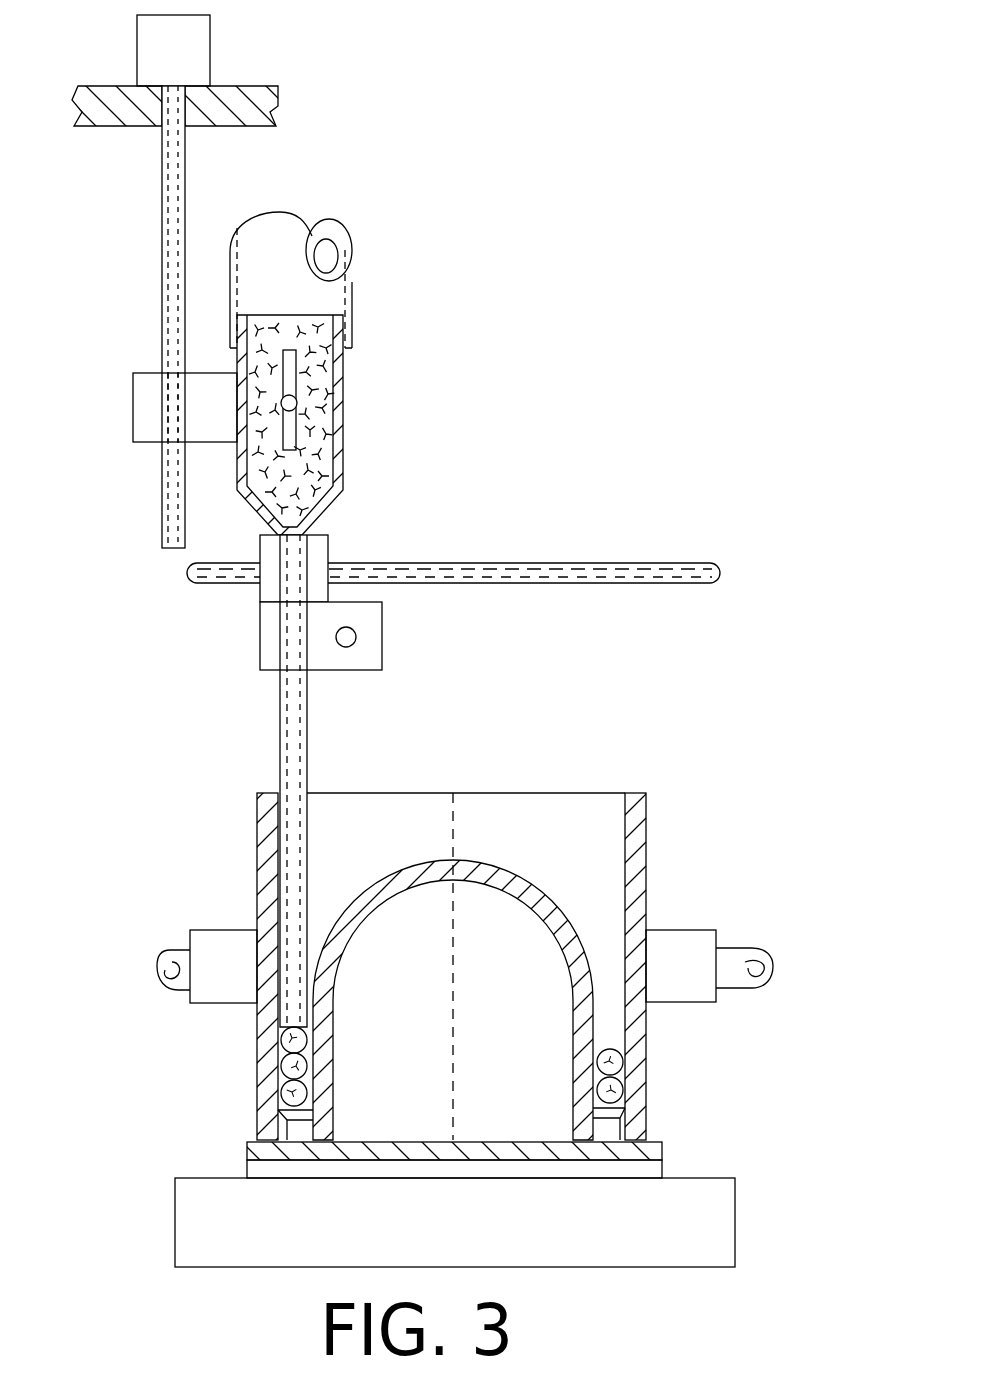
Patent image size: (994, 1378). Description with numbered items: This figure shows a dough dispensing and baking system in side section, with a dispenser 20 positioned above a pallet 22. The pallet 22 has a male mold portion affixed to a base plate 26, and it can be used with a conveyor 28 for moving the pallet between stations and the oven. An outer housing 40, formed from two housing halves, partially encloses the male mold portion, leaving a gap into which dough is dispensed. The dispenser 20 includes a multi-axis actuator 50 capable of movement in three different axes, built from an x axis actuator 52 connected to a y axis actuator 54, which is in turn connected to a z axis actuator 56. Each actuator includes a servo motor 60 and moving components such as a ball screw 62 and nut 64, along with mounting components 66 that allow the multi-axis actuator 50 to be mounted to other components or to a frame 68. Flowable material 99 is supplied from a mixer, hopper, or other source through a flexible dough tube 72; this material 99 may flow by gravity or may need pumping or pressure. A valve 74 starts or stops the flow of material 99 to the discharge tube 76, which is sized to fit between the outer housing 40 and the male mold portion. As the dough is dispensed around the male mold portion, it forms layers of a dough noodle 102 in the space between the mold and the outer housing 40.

The dispenser 20 is at (582, 219).
The pallet 22 is at (735, 819).
The base plate 26 is at (248, 1147).
The conveyor 28 is at (175, 1233).
The outer housing 40 is at (514, 784).
The multi-axis actuator 50 is at (152, 586).
The x axis actuator 52 is at (356, 637).
The y axis actuator 54 is at (540, 562).
The z axis actuator 56 is at (185, 174).
The servo motor 60 is at (210, 46).
The ball screw 62 is at (133, 428).
The nut 64 is at (141, 356).
The mounting components 66 is at (126, 78).
The frame 68 is at (278, 100).
The flexible dough tube 72 is at (352, 283).
The valve 74 is at (343, 378).
The discharge tube 76 is at (280, 736).
The material 99 is at (330, 453).
The dough noodle 102 is at (623, 1060).